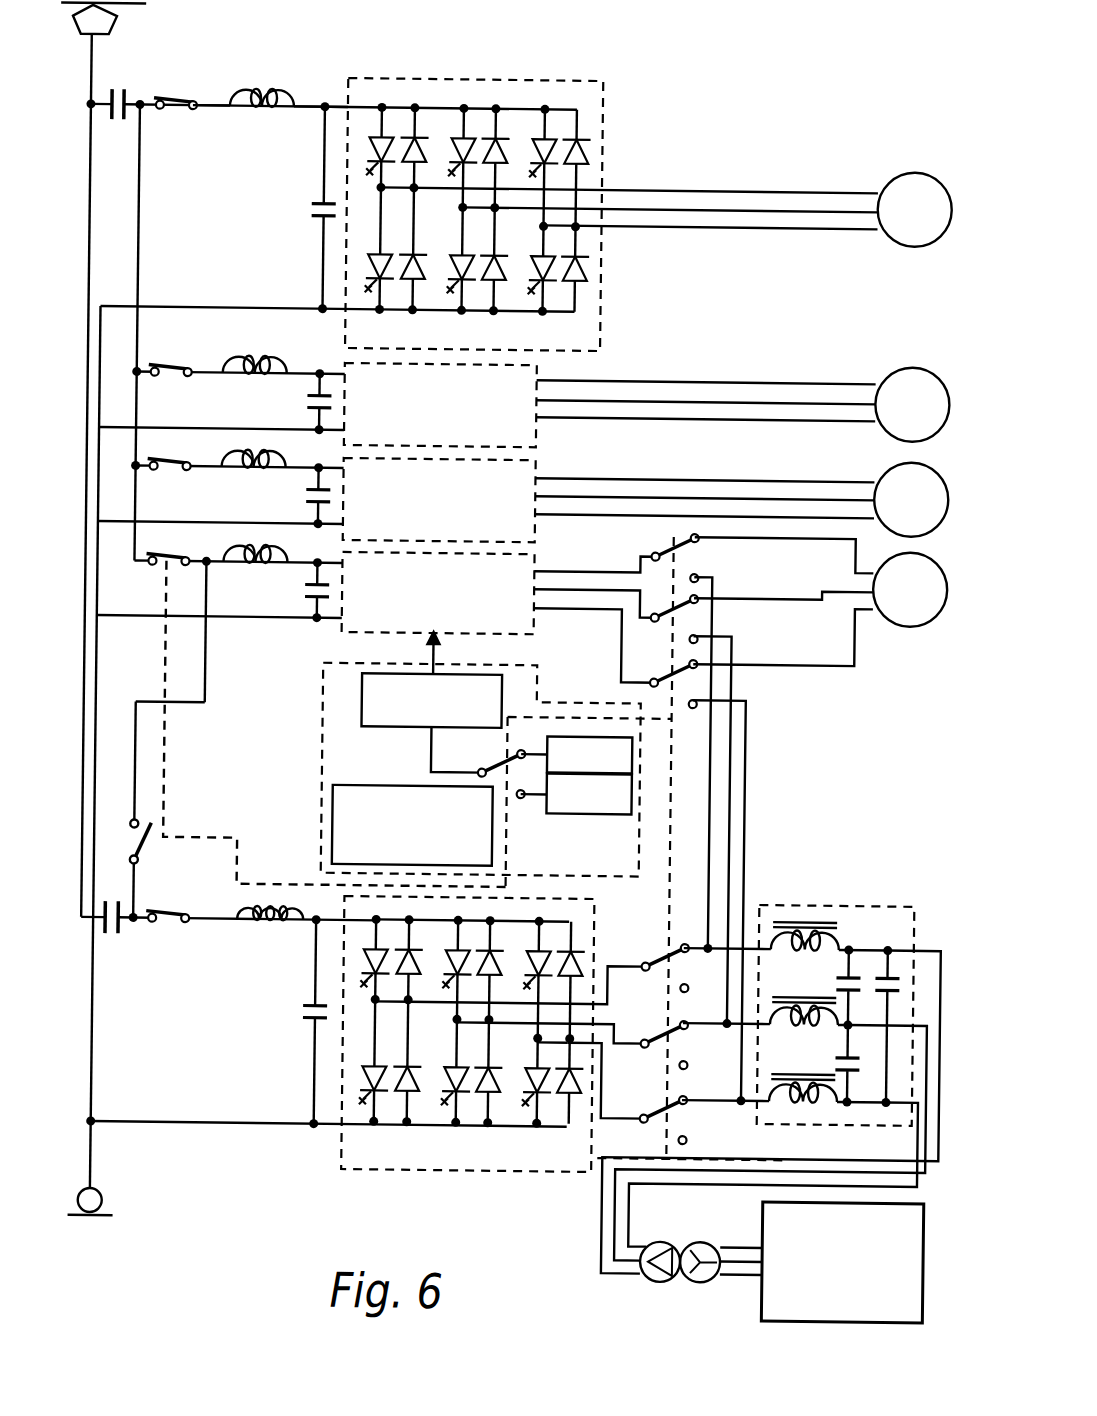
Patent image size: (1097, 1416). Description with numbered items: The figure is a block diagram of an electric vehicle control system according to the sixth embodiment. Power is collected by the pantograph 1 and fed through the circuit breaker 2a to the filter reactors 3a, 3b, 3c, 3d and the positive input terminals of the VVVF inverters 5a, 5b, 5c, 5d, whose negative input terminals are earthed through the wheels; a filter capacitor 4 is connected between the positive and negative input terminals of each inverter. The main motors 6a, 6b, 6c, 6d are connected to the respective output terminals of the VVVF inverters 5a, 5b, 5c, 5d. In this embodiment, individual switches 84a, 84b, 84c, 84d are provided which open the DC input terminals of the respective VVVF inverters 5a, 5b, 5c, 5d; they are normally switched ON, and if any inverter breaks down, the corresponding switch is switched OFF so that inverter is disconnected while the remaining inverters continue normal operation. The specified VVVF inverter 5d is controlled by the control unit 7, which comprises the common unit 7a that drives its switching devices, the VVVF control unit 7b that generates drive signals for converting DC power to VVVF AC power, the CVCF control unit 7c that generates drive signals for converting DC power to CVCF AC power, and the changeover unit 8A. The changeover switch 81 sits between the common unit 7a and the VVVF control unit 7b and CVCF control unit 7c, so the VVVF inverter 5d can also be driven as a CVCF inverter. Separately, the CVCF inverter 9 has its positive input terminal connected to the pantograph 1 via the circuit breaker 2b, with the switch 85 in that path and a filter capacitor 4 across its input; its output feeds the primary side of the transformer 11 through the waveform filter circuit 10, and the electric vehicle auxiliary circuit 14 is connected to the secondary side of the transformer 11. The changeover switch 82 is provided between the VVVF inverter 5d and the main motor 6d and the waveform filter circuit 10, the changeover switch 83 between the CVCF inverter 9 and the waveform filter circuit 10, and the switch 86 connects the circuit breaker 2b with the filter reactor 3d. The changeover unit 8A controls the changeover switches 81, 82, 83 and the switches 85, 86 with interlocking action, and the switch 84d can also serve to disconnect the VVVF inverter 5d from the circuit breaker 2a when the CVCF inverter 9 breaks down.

The pantograph 1 is at (118, 20).
The circuit breaker 2a is at (125, 90).
The circuit breaker 2b is at (121, 934).
The filter reactor 3a is at (263, 90).
The filter reactor 3b is at (258, 358).
The filter reactor 3c is at (245, 470).
The filter reactor 3d is at (247, 571).
The filter capacitor 4 is at (312, 208).
The VVVF inverter 5a is at (535, 75).
The VVVF inverter 5b is at (543, 362).
The VVVF inverter 5c is at (543, 456).
The VVVF inverter 5d is at (543, 553).
The main motor 6a is at (898, 166).
The main motor 6b is at (904, 360).
The main motor 6c is at (881, 465).
The main motor 6d is at (914, 617).
The control unit 7 is at (330, 714).
The common unit 7a is at (422, 724).
The VVVF control unit 7b is at (590, 731).
The CVCF control unit 7c is at (585, 808).
The changeover unit 8A is at (341, 818).
The CVCF inverter 9 is at (354, 1140).
The waveform filter circuit 10 is at (848, 896).
The transformer 11 is at (712, 1235).
The electric vehicle auxiliary circuit 14 is at (776, 1292).
The changeover switch 81 is at (500, 762).
The changeover switch 82 is at (664, 545).
The changeover switch 83 is at (660, 955).
The switch 84a is at (173, 108).
The switch 84b is at (172, 376).
The switch 84c is at (167, 470).
The switch 84d is at (163, 566).
The switch 85 is at (183, 924).
The switch 86 is at (160, 826).